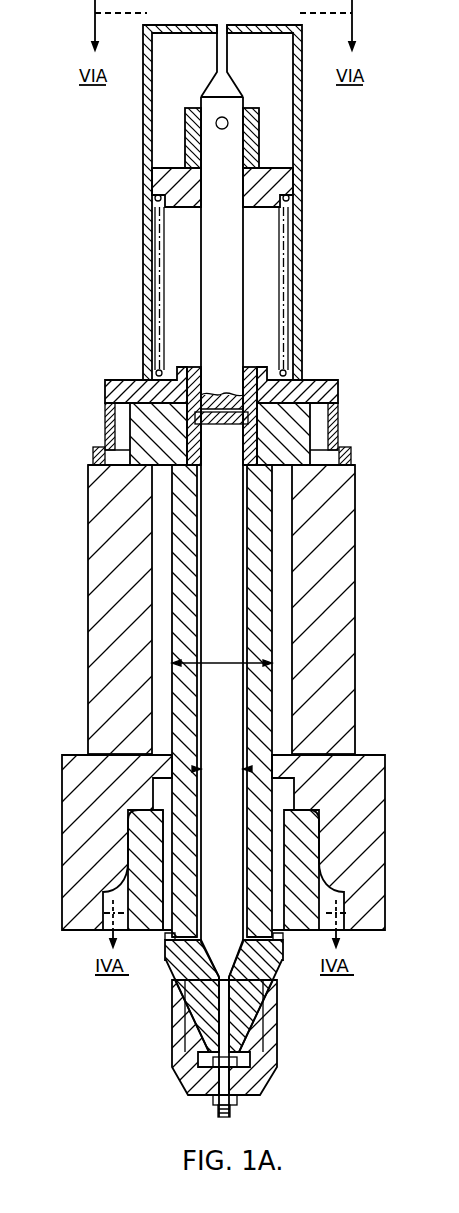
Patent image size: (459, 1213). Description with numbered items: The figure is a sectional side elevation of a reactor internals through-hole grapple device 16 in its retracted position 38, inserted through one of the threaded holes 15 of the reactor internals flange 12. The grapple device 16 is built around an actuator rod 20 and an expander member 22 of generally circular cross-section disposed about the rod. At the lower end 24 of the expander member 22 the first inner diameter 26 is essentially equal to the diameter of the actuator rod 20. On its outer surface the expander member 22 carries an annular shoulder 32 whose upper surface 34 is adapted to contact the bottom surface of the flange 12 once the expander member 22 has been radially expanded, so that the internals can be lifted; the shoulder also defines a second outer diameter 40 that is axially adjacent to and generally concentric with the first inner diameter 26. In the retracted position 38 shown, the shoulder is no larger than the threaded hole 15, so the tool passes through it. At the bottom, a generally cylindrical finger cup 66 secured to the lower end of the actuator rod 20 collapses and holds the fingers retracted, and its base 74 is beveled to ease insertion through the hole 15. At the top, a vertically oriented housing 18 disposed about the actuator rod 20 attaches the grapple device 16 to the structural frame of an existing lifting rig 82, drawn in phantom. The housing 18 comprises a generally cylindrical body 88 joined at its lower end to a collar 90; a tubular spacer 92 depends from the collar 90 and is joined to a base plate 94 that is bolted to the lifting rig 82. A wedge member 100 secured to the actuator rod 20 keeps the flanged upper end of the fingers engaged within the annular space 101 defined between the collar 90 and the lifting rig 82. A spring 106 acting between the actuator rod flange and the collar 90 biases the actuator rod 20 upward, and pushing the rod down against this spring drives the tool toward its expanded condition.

The flange 12 is at (232, 822).
The threaded holes 15 is at (170, 882).
The through-hole grapple device 16 is at (225, 190).
The housing 18 is at (141, 199).
The actuator rod 20 is at (243, 272).
The expander member 22 is at (166, 535).
The lower end 24 is at (75, 752).
The first inner diameter 26 is at (222, 768).
The annular shoulder 32 is at (283, 952).
The upper surface 34 is at (176, 926).
The retracted position 38 is at (236, 21).
The second outer diameter 40 is at (204, 661).
The finger cup 66 is at (268, 1038).
The base 74 is at (253, 1096).
The lifting rig 82 is at (352, 546).
The cylindrical body 88 is at (302, 155).
The collar 90 is at (327, 380).
The tubular spacer 92 is at (338, 420).
The base plate 94 is at (352, 456).
The wedge member 100 is at (190, 366).
The annular space 101 is at (122, 427).
The spring 106 is at (284, 308).